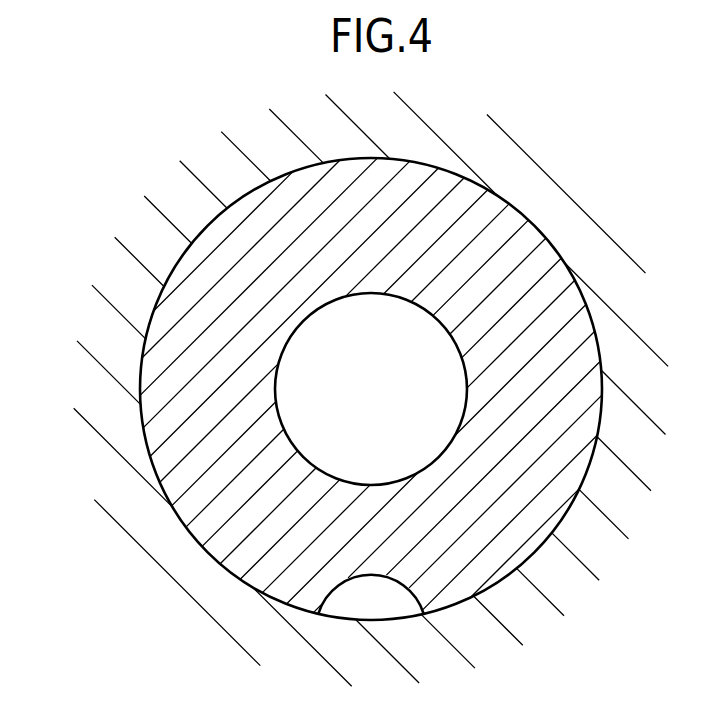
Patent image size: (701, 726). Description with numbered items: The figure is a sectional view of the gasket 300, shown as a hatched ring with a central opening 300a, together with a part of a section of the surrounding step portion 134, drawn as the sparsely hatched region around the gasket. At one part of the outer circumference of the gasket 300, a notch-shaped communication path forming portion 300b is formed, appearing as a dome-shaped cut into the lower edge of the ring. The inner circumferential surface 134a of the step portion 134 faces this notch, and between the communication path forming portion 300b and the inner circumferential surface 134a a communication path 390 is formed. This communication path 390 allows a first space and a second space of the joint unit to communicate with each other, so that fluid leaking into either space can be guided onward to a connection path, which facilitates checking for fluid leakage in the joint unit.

The step portion 134 is at (397, 120).
The inner circumferential surface 134a is at (363, 623).
The gasket 300 is at (493, 243).
The central hole 300a is at (408, 397).
The communication path forming portion 300b is at (372, 573).
The communication path 390 is at (411, 601).